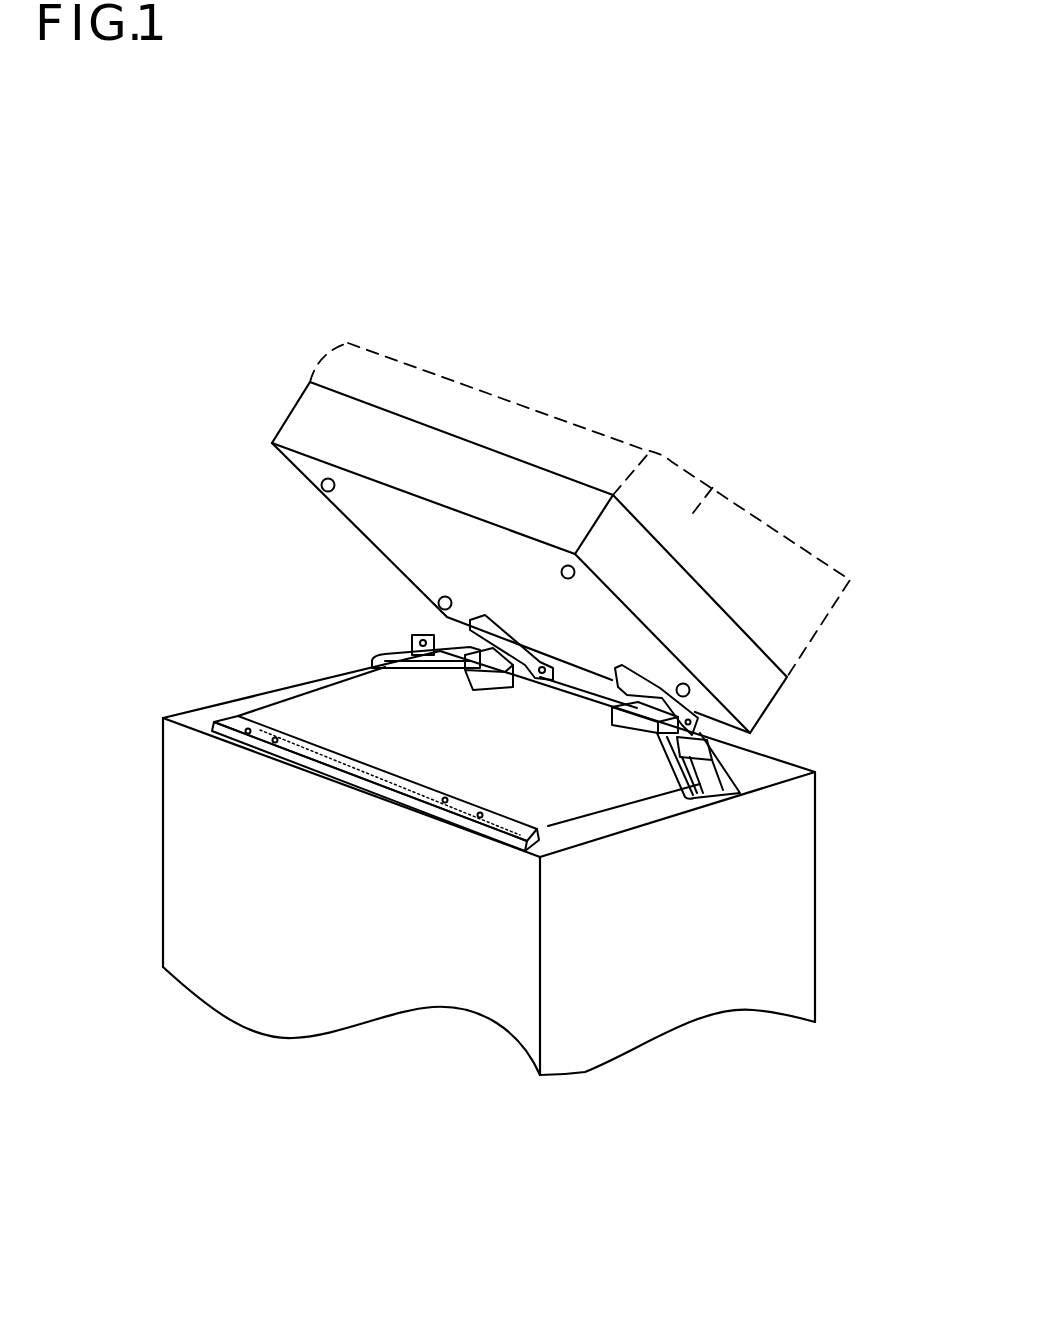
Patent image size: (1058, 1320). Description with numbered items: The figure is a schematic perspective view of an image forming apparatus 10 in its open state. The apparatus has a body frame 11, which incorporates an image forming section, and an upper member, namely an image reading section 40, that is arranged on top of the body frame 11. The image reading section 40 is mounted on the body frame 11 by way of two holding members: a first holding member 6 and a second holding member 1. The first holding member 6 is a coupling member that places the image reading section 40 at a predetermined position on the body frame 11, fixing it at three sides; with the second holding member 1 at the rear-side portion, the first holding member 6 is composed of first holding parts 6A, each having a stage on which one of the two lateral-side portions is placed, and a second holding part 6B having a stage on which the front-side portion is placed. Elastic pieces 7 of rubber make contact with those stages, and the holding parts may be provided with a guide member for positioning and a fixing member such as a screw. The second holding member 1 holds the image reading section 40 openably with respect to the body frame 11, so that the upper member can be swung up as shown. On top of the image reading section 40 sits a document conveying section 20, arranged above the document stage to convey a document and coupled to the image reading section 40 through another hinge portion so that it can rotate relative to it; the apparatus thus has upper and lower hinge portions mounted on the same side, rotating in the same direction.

The second holding member 1 is at (630, 735).
The first holding member 6 is at (715, 1152).
The first holding parts 6A is at (695, 753).
The second holding part 6B is at (430, 673).
The elastic pieces 7 is at (561, 570).
The image forming apparatus 10 is at (863, 698).
The body frame 11 is at (787, 903).
The document conveying section 20 is at (715, 487).
The image reading section 40 is at (723, 643).